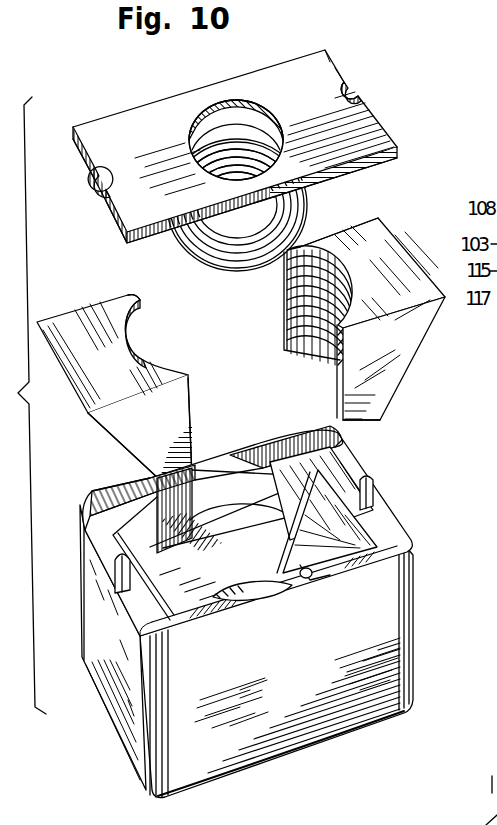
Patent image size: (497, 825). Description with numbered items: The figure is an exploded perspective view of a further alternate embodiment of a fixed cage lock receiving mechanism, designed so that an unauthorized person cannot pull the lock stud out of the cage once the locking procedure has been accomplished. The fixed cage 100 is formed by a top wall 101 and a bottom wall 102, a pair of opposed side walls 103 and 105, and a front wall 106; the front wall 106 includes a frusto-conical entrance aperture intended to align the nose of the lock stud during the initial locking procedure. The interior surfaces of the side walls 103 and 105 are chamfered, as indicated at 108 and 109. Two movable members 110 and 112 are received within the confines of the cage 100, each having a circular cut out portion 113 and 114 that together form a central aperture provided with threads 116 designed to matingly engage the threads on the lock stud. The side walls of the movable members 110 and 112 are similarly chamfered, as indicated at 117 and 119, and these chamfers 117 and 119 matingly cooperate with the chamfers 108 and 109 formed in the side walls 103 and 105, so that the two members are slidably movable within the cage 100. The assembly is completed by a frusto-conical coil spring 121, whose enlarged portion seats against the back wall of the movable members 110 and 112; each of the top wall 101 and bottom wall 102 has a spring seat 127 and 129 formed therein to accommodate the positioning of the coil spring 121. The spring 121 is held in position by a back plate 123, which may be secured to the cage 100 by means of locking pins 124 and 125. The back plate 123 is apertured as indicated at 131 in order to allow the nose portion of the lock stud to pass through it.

The fixed cage 100 is at (260, 594).
The top wall 101 is at (310, 689).
The bottom wall 102 is at (253, 517).
The side wall 103 is at (100, 665).
The side wall 105 is at (377, 512).
The front wall 106 is at (277, 588).
The chamfer 108 is at (190, 566).
The chamfer 109 is at (388, 525).
The movable member 110 is at (130, 373).
The movable member 112 is at (372, 308).
The circular cut out portion 113 is at (150, 313).
The circular cut out portion 114 is at (355, 227).
The threads 116 is at (145, 345).
The chamfer 117 is at (110, 437).
The chamfer 119 is at (400, 377).
The frusto-conical coil spring 121 is at (307, 213).
The back plate 123 is at (239, 150).
The locking pin 124 is at (115, 570).
The locking pin 125 is at (373, 481).
The spring seat 127 is at (303, 570).
The spring seat 129 is at (237, 480).
The aperture 131 is at (213, 105).